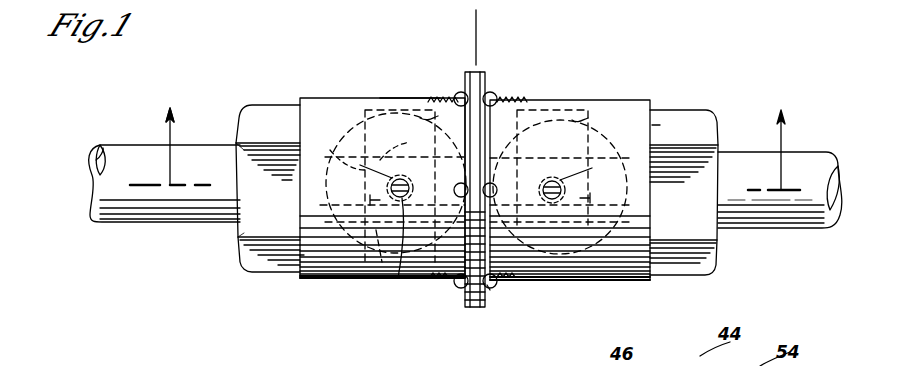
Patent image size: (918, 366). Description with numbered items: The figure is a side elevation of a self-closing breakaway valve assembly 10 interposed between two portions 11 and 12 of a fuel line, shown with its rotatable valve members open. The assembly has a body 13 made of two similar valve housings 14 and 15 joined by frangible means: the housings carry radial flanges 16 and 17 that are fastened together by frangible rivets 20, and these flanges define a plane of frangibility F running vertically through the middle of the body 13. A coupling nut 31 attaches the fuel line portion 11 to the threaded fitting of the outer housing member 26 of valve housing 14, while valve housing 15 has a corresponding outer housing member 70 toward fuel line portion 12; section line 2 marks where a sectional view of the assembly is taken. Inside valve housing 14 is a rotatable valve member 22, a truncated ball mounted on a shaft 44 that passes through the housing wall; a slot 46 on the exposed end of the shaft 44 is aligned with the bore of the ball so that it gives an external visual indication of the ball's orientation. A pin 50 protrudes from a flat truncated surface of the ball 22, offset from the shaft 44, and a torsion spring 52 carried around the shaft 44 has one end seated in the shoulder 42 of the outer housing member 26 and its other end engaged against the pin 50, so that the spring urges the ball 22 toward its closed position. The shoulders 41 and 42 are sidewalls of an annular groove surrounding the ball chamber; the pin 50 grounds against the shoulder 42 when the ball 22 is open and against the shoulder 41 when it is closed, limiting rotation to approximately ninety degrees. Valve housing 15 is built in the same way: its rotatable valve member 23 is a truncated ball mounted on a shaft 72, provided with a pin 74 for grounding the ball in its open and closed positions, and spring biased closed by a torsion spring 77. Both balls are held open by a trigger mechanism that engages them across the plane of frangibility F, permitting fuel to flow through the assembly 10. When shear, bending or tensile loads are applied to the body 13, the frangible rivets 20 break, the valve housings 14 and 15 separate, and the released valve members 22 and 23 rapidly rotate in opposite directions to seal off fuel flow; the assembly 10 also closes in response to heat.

The self-closing breakaway valve assembly 10 is at (346, 296).
The fuel line portion 11 is at (150, 222).
The fuel line portion 12 is at (810, 228).
The body 13 is at (331, 86).
The valve housing 14 is at (393, 92).
The valve housing 15 is at (634, 94).
The radial flange 16 is at (478, 307).
The radial flange 17 is at (494, 285).
The frangible rivets 20 is at (492, 95).
The rotatable valve member 22 is at (350, 140).
The rotatable valve member 23 is at (650, 100).
The outer housing member 26 is at (303, 258).
The first coupling nut 31 is at (264, 105).
The shoulder 41 is at (426, 120).
The shoulder 42 is at (381, 272).
The shaft 44 is at (398, 278).
The slot 46 is at (408, 178).
The pin 50 is at (399, 139).
The torsion spring 52 is at (336, 149).
The outer housing member 70 is at (632, 278).
The shaft 72 is at (552, 200).
The pin 74 is at (576, 120).
The torsion spring 77 is at (660, 128).
The section line 2- 2 is at (474, 144).
The plane of frangibility F is at (476, 28).